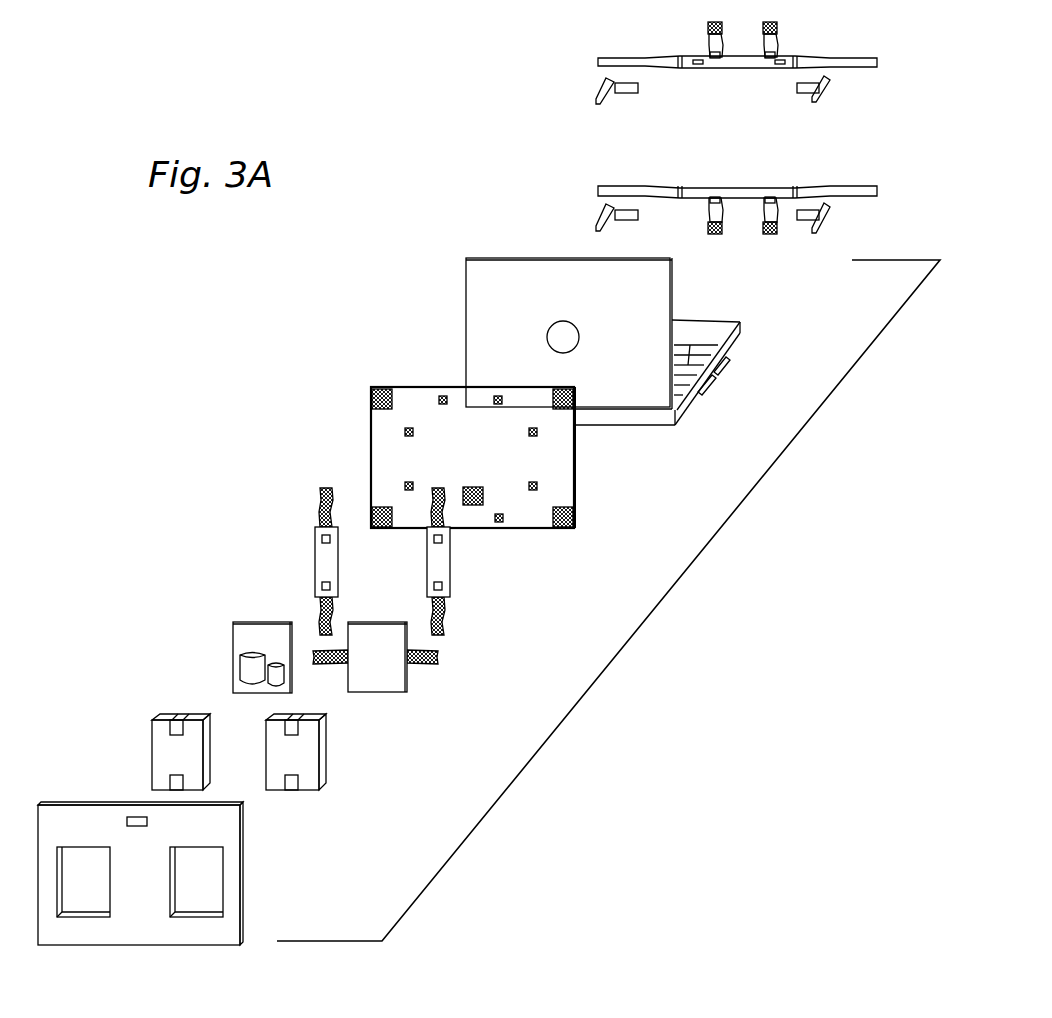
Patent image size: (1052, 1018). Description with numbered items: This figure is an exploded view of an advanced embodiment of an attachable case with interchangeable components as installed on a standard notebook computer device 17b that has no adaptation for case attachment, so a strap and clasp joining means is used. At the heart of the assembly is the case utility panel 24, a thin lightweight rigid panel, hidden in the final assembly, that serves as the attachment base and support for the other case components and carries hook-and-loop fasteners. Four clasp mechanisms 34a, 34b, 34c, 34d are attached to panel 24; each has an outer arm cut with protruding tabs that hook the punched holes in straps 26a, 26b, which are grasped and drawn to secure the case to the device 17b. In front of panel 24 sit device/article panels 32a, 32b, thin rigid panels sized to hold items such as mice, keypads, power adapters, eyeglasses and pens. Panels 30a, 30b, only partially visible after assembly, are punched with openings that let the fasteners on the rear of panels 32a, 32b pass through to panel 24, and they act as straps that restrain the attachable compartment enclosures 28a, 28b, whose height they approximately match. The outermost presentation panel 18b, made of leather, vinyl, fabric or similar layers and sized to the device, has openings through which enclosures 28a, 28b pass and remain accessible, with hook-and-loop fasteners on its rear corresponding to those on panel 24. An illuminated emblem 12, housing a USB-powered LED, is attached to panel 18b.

The illuminated emblem 12 is at (140, 822).
The standard notebook computer device 17b is at (505, 338).
The outermost presentation panel 18b is at (224, 852).
The case utility panel 24 is at (460, 460).
The strap 26a is at (598, 62).
The strap 26b is at (597, 193).
The attachable compartment enclosure 28a is at (155, 728).
The attachable compartment enclosure 28b is at (308, 728).
The panel 30a is at (320, 570).
The panel 30b is at (440, 566).
The device/article panel 32a is at (243, 687).
The device/article panel 32b is at (394, 685).
The strap clasp 34a is at (595, 93).
The strap clasp 34b is at (815, 100).
The strap clasp 34c is at (595, 222).
The strap clasp 34d is at (813, 228).